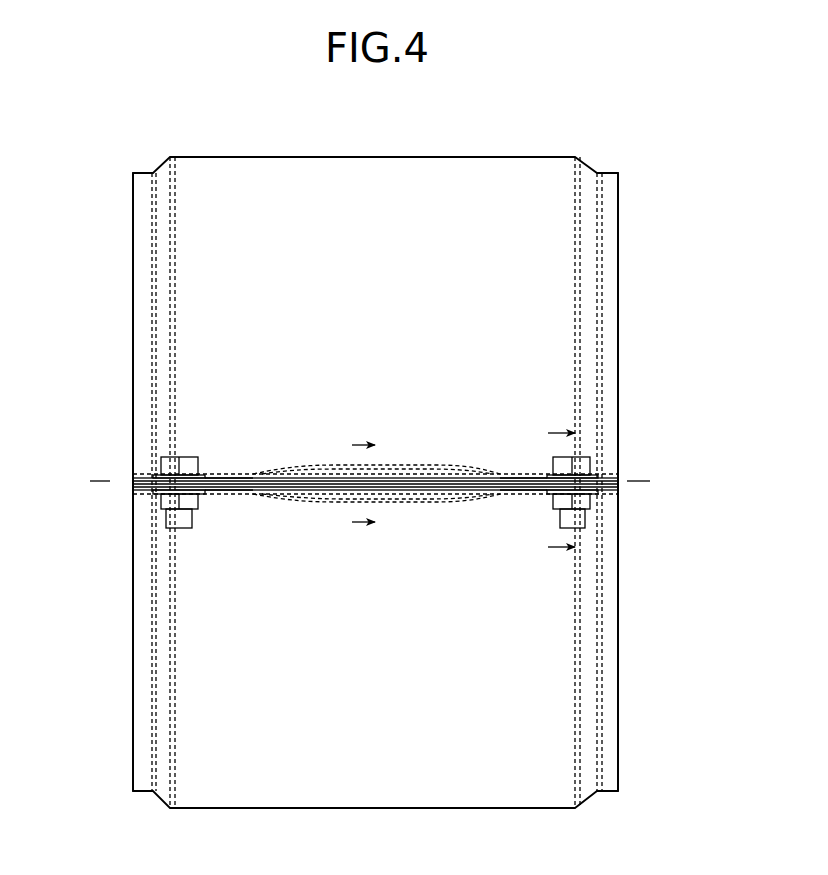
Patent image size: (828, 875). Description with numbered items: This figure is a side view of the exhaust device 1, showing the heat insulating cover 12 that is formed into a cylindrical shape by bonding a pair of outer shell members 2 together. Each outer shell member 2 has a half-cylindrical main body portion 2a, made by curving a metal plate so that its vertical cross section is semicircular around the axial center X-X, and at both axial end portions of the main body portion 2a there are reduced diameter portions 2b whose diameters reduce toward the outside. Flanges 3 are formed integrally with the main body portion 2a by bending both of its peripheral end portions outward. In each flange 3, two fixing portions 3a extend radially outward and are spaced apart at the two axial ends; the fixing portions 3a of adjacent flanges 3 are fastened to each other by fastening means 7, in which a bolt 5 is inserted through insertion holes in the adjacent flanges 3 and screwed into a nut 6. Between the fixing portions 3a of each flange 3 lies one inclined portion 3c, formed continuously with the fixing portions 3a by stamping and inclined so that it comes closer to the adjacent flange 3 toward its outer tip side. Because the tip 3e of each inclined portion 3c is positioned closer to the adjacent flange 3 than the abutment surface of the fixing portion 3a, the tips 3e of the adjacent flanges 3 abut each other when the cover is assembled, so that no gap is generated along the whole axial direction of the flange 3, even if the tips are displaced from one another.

The exhaust device 1 is at (625, 165).
The outer shell member 2 is at (588, 147).
The main body portion 2a is at (463, 182).
The reduced diameter portion 2b is at (588, 232).
The heat insulating cover 12 is at (538, 145).
The flange 3 is at (435, 480).
The fixing portion 3a is at (233, 490).
The inclined portion 3c is at (352, 488).
The tip 3e is at (402, 478).
The bolt 5 is at (173, 467).
The nut 6 is at (188, 527).
The fastening means 7 is at (195, 460).